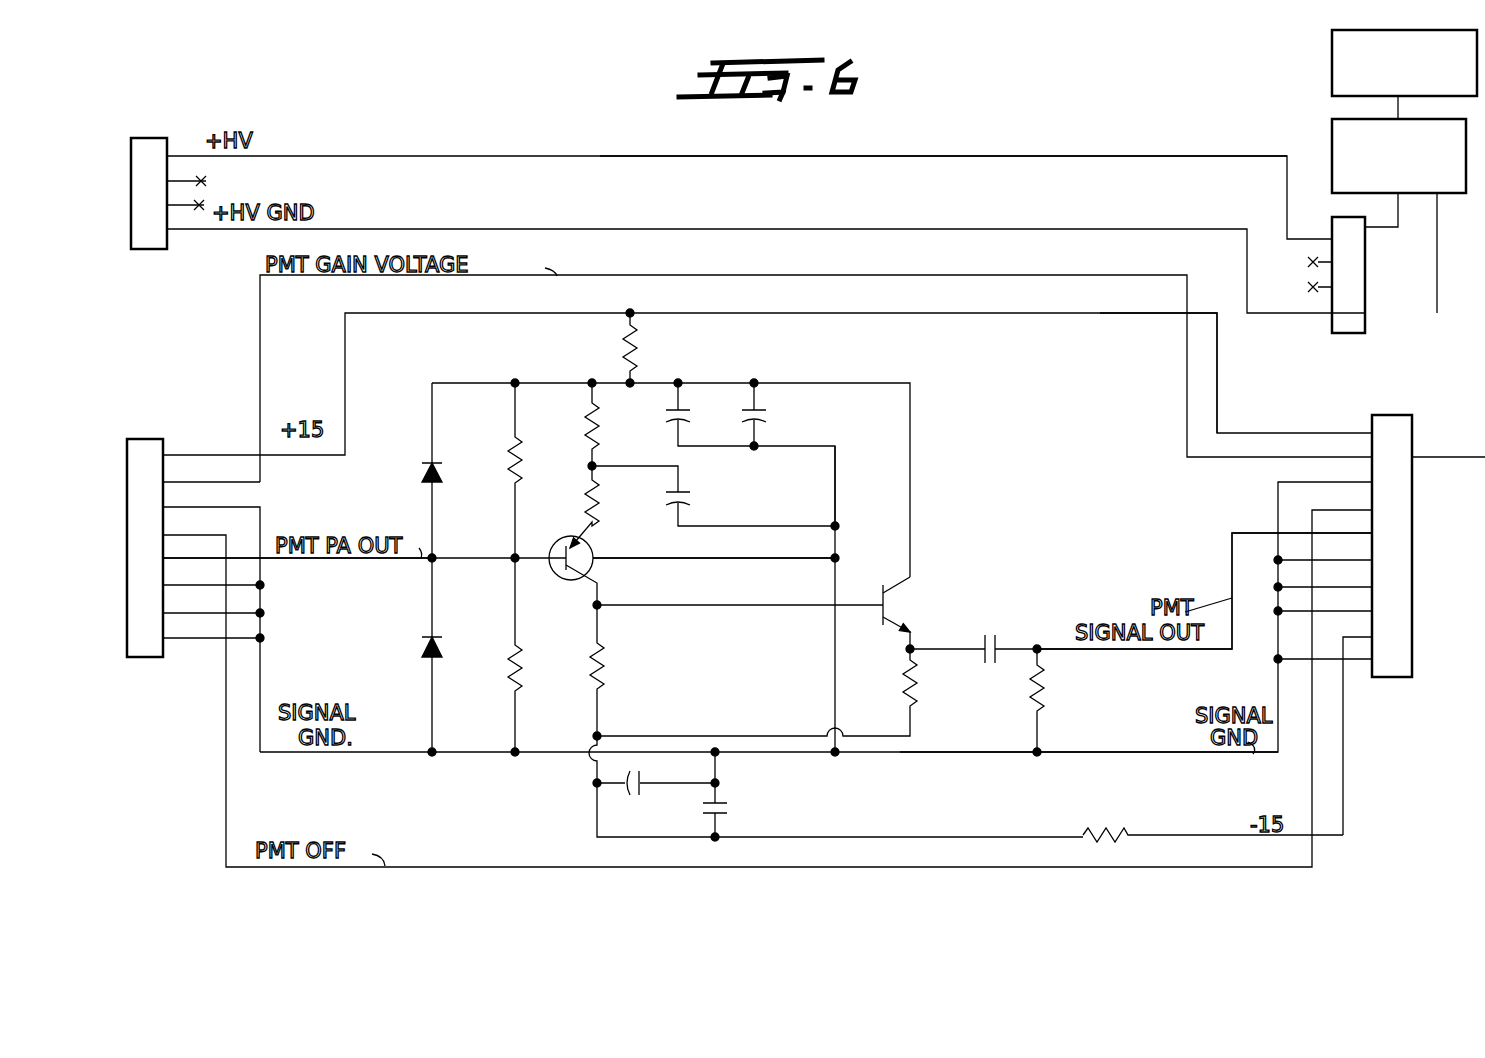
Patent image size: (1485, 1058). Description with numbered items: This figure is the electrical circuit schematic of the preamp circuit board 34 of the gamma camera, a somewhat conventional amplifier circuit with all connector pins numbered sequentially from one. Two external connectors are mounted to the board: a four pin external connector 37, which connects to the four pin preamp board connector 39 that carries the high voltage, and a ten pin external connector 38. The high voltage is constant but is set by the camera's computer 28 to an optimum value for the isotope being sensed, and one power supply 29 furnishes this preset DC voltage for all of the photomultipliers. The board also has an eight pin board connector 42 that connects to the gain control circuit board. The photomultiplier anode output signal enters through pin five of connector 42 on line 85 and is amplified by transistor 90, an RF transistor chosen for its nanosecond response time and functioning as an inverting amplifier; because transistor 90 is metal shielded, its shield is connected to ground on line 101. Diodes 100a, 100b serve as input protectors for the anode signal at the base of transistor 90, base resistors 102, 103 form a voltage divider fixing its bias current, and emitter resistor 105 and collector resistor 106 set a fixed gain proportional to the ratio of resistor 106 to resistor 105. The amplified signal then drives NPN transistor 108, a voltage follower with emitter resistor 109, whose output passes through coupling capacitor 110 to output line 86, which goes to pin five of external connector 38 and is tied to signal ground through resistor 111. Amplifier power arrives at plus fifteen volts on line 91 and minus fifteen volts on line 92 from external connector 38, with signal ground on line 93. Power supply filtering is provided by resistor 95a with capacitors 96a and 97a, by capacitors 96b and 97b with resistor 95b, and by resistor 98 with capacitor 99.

The preamp board connector 39 is at (143, 137).
The preamp circuit board 34 is at (1060, 147).
The computer 28 is at (1332, 62).
The power supply 29 is at (1332, 138).
The external connector 37 is at (1332, 322).
The line 91 is at (1200, 313).
The board connector 42 is at (166, 440).
The resistor 95a is at (626, 340).
The capacitor 96a is at (683, 408).
The capacitor 97a is at (757, 409).
The resistor 98 is at (588, 427).
The capacitor 99 is at (690, 492).
The diode 100a is at (428, 475).
The base resistor 102 is at (512, 455).
The emitter resistor 105 is at (588, 502).
The transistor 90 is at (558, 578).
The line 101 is at (690, 560).
The line 85 is at (398, 562).
The diode 100b is at (428, 648).
The base resistor 103 is at (512, 678).
The collector resistor 106 is at (600, 674).
The NPN transistor 108 is at (900, 630).
The emitter resistor 109 is at (905, 695).
The coupling capacitor 110 is at (986, 642).
The output line 86 is at (1034, 647).
The resistor 111 is at (1033, 700).
The line 93 is at (1072, 752).
The external connector 38 is at (1372, 478).
The capacitor 97b is at (642, 783).
The capacitor 96b is at (722, 806).
The line 92 is at (927, 835).
The resistor 95b is at (1128, 830).